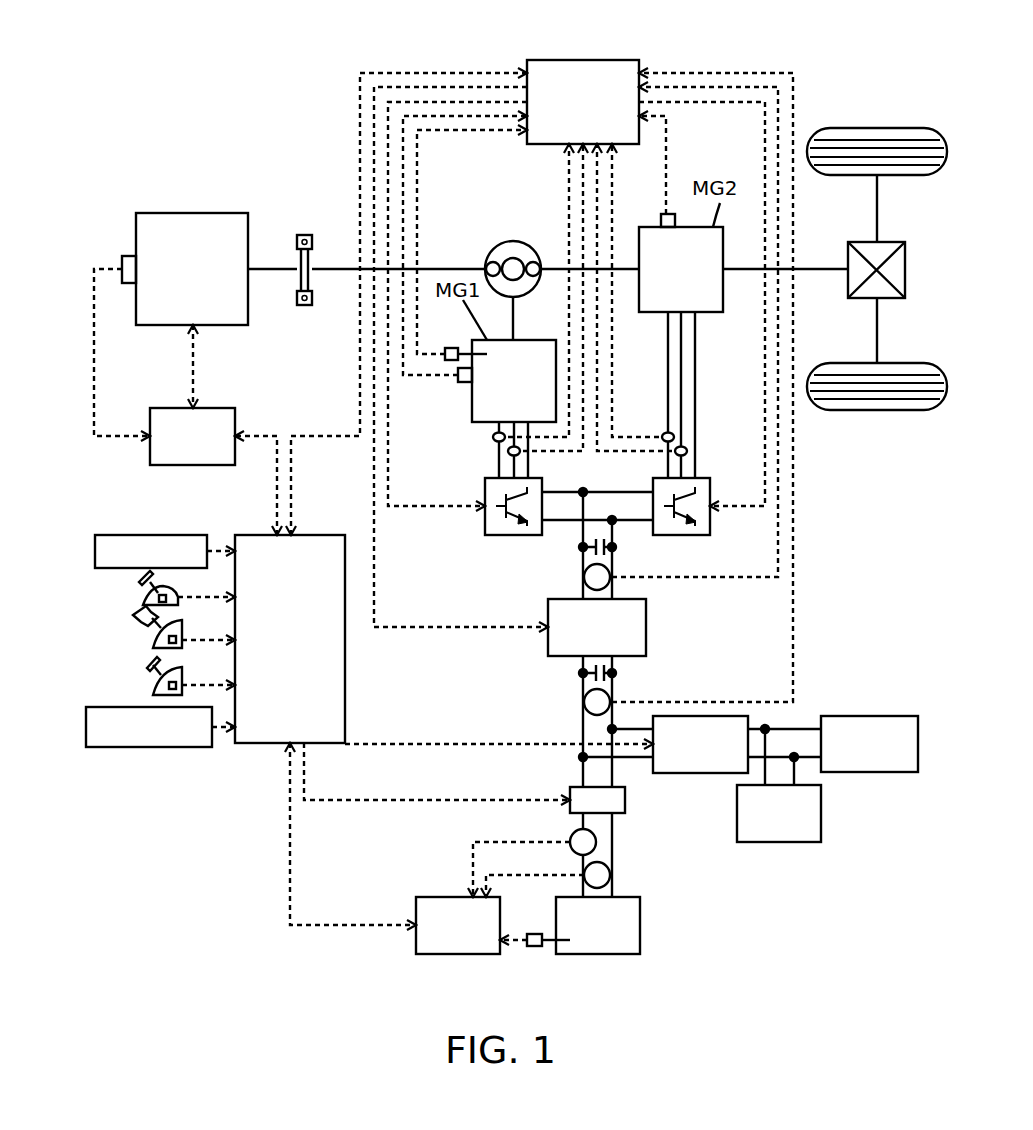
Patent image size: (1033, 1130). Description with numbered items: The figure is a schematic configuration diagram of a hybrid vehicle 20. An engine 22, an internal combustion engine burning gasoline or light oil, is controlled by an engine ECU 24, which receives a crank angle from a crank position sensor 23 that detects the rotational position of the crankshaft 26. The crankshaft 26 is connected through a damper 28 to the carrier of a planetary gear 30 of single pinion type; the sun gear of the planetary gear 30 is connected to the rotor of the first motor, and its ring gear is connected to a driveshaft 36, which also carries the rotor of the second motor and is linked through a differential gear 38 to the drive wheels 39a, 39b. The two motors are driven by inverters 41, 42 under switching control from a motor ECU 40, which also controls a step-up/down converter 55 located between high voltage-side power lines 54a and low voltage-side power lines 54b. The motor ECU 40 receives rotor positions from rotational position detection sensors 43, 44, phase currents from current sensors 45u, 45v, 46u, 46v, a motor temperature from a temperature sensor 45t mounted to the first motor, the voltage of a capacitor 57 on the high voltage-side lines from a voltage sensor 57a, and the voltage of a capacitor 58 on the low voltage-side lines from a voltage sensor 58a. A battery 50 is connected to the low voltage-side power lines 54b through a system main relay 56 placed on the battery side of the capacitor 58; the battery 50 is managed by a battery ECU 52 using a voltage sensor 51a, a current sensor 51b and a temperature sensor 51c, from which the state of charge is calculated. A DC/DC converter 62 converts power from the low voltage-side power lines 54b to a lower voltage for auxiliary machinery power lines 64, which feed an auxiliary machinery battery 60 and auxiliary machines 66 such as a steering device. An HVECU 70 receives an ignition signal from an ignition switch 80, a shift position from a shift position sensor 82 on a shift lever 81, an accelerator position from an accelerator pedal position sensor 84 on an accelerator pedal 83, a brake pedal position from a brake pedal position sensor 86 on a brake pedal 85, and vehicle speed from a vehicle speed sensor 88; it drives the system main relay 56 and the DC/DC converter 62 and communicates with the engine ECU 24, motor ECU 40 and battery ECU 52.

The hybrid vehicle 20 is at (723, 58).
The engine 22 is at (193, 213).
The crank position sensor 23 is at (131, 256).
The engine ECU 24 is at (220, 408).
The crankshaft 26 is at (268, 268).
The damper 28 is at (304, 235).
The planetary gear 30 is at (513, 241).
The driveshaft 36 is at (812, 268).
The differential gear 38 is at (888, 242).
The drive wheel 39a is at (877, 128).
The drive wheel 39b is at (877, 410).
The motor ECU 40 is at (584, 60).
The inverter 41 is at (485, 488).
The inverter 42 is at (653, 482).
The rotational position detection sensor 43 is at (466, 383).
The rotational position detection sensor 44 is at (670, 213).
The temperature sensor 45t is at (448, 348).
The current sensor 45u is at (493, 437).
The current sensor 45v is at (508, 451).
The current sensor 46u is at (674, 437).
The current sensor 46v is at (688, 451).
The battery 50 is at (640, 922).
The voltage sensor 51a is at (611, 873).
The current sensor 51b is at (597, 841).
The temperature sensor 51c is at (535, 946).
The battery ECU 52 is at (445, 897).
The high voltage-side power lines 54a is at (584, 530).
The low voltage-side power lines 54b is at (598, 769).
The step-up/down converter 55 is at (646, 626).
The system main relay 56 is at (625, 798).
The capacitor 57 is at (617, 547).
The voltage sensor 57a is at (584, 577).
The capacitor 58 is at (616, 672).
The voltage sensor 58a is at (584, 702).
The auxiliary machinery battery 60 is at (858, 716).
The DC/DC converter 62 is at (700, 773).
The auxiliary machinery power lines 64 is at (800, 752).
The auxiliary machines 66 is at (821, 812).
The HVECU 70 is at (318, 535).
The ignition switch 80 is at (95, 549).
The shift lever 81 is at (140, 585).
The shift position sensor 82 is at (145, 598).
The accelerator pedal 83 is at (150, 625).
The accelerator pedal position sensor 84 is at (153, 641).
The brake pedal 85 is at (150, 672).
The brake pedal position sensor 86 is at (153, 687).
The vehicle speed sensor 88 is at (86, 726).